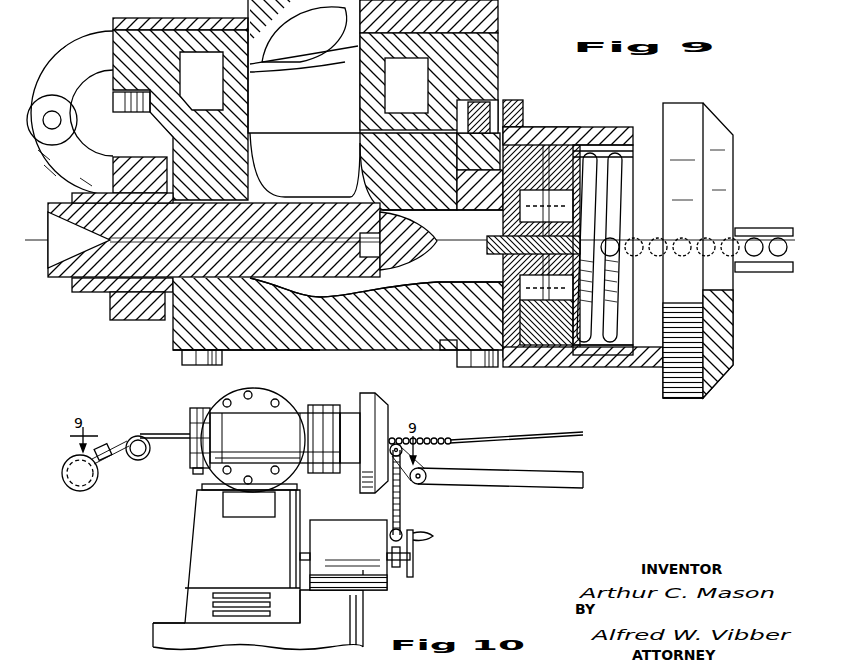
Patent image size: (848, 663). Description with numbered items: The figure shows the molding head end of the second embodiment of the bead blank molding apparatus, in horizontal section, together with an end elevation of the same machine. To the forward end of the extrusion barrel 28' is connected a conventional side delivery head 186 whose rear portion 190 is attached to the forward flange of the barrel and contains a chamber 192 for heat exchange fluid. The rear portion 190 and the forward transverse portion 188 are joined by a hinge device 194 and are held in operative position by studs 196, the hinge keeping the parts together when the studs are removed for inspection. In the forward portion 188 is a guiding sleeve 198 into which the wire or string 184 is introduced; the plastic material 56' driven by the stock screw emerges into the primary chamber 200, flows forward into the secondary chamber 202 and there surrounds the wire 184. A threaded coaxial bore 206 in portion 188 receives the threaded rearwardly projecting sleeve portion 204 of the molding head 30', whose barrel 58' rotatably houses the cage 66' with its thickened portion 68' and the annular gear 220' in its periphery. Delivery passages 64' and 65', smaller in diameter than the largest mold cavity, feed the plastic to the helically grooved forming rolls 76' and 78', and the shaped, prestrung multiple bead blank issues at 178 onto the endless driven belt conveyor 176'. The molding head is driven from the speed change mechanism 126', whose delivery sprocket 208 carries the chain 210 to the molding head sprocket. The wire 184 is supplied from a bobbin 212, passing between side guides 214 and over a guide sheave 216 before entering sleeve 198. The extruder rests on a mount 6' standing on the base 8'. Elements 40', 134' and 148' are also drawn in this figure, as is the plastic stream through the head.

In FIG. 9, the extrusion barrel 28' is at (453, 16).
In FIG. 9, the chamber 192 is at (497, 48).
In FIG. 9, the rear portion 190 is at (483, 82).
In FIG. 9, the side delivery head 186 is at (514, 104).
In FIG. 9, the studs 196 is at (180, 358).
In FIG. 9, the annular gear 220' is at (583, 270).
In FIG. 9, the molding head 30' is at (603, 212).
In FIG. 10, the molding head 30' is at (357, 454).
In FIG. 9, the thickened portion 68' is at (661, 248).
In FIG. 9, the forming roll 76' is at (651, 247).
In FIG. 9, the barrel 58' is at (603, 278).
In FIG. 9, the delivery passage 65' is at (596, 259).
In FIG. 9, the cage 66' is at (594, 383).
In FIG. 9, the forming roll 78' is at (673, 400).
In FIG. 9, the chamfered flange 148' is at (745, 250).
In FIG. 9, the issuing point of bead blank 178 is at (760, 228).
In FIG. 10, the issuing point of bead blank 178 is at (428, 431).
In FIG. 9, the delivery passage 64' is at (441, 246).
In FIG. 9, the wire or string 184 is at (40, 243).
In FIG. 10, the wire or string 184 is at (173, 442).
In FIG. 9, the guiding sleeve 198 is at (105, 305).
In FIG. 9, the primary chamber 200 is at (262, 350).
In FIG. 9, the secondary chamber 202 is at (387, 290).
In FIG. 9, the forward transverse portion 188 is at (392, 327).
In FIG. 10, the forward transverse portion 188 is at (278, 396).
In FIG. 9, the threaded coaxial bore 206 is at (433, 360).
In FIG. 9, the sleeve portion 204 is at (517, 367).
In FIG. 9, the hinge device 194 is at (52, 140).
In FIG. 10, the hinge device 194 is at (193, 476).
In FIG. 9, the cavity 40' is at (180, 109).
In FIG. 9, the plastic material 56' is at (304, 98).
In FIG. 10, the guide sheave 216 is at (141, 437).
In FIG. 10, the side guides 214 is at (108, 462).
In FIG. 10, the bobbin 212 is at (85, 483).
In FIG. 10, the mount 6' is at (221, 553).
In FIG. 10, the base 8' is at (142, 638).
In FIG. 10, the belt conveyor 176' is at (487, 467).
In FIG. 10, the chain 210 is at (400, 507).
In FIG. 10, the delivery sprocket 208 is at (402, 532).
In FIG. 10, the crank 134' is at (444, 558).
In FIG. 10, the speed change mechanism 126' is at (369, 564).